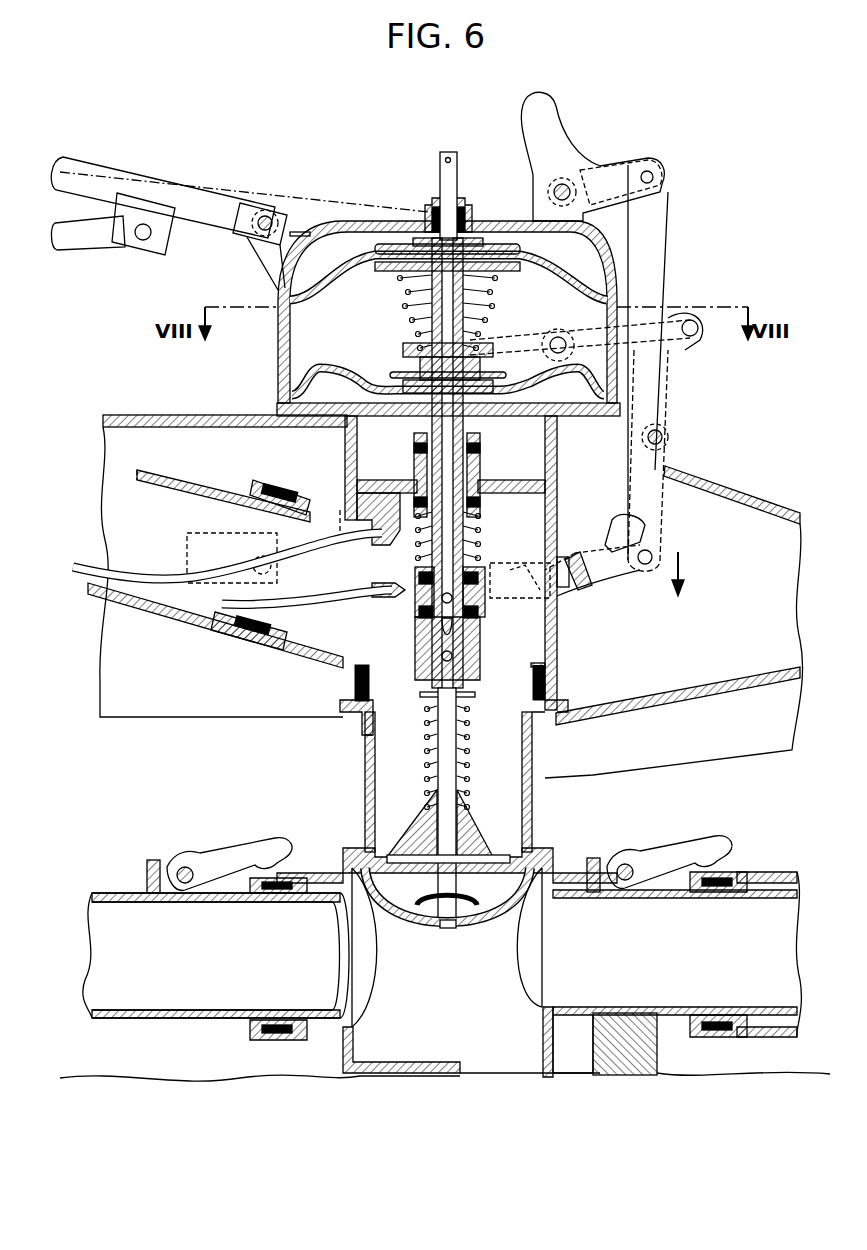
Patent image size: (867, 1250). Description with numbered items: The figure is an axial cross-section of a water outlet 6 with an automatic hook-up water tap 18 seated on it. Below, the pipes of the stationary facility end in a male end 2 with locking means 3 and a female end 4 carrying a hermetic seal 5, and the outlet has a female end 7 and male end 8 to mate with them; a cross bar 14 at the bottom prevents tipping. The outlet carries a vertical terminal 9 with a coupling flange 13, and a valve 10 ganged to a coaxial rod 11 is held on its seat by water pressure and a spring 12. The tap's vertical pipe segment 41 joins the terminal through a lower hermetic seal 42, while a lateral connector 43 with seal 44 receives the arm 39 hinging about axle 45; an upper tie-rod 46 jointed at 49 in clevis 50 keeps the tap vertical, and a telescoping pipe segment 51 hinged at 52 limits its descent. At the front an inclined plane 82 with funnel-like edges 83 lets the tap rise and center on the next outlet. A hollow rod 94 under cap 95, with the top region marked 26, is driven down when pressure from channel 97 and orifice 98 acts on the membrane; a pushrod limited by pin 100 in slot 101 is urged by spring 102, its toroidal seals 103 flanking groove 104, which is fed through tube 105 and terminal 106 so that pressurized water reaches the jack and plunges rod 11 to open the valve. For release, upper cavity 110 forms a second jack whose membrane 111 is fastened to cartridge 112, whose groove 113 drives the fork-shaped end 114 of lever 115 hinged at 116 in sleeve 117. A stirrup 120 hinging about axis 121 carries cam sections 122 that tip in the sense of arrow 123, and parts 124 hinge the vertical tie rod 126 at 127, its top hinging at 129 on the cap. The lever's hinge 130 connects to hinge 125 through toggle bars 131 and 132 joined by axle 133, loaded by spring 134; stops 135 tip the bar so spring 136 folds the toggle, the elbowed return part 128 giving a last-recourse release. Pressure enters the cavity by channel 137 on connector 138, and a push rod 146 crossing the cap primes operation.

The male end 2 is at (175, 1020).
The locking means 3 is at (226, 862).
The female end 4 is at (760, 1037).
The hermetic seal 5 is at (252, 1032).
The water outlet 6 is at (534, 848).
The female end 7 is at (311, 1037).
The male end 8 is at (680, 1020).
The vertical terminal 9 is at (368, 769).
The valve 10 is at (488, 905).
The rod 11 is at (458, 768).
The spring 12 is at (470, 725).
The coupling flange 13 is at (345, 717).
The cross bar 14 is at (625, 1055).
The water tap 18 is at (618, 266).
The top cover boss 26 is at (467, 213).
The arm 39 is at (183, 475).
The vertical pipe segment 41 is at (558, 641).
The lower hermetic seal 42 is at (545, 681).
The connector 43 is at (290, 659).
The hermetic seal 44 is at (230, 641).
The axle 45 is at (283, 570).
The upper tie-rod 46 is at (130, 177).
The joint 49 is at (262, 216).
The clevis 50 is at (305, 217).
The pipe segment 51 is at (92, 241).
The hinge 52 is at (140, 241).
The inclined plane 82 is at (668, 681).
The lower edges 83 is at (680, 741).
The hollow rod 94 is at (472, 428).
The cap 95 is at (405, 221).
The channel 97 is at (497, 285).
The transverse orifice 98 is at (462, 614).
The pin 100 is at (438, 659).
The slot 101 is at (416, 649).
The spring 102 is at (472, 536).
The toroidal seals 103 is at (419, 587).
The groove 104 is at (470, 594).
The tube 105 is at (318, 607).
The terminal 106 is at (375, 585).
The upper cavity 110 is at (382, 445).
The membrane 111 is at (318, 368).
The cartridge 112 is at (404, 350).
The groove 113 is at (418, 364).
The fork-shaped end 114 is at (512, 354).
The lever 115 is at (625, 325).
The hinge 116 is at (557, 340).
The sleeve 117 is at (280, 376).
The stirrup 120 is at (594, 589).
The axis 121 is at (568, 559).
The slanted section 122 is at (546, 610).
The arrow 123 is at (684, 571).
The parts 124 is at (622, 587).
The hinge 125 is at (652, 559).
The vertical tie rod 126 is at (652, 219).
The hinge 127 is at (652, 171).
The elbowed return part 128 is at (553, 126).
The hinge 129 is at (553, 190).
The hinge 130 is at (697, 324).
The small bar 131 is at (680, 397).
The small bar 132 is at (660, 475).
The axle 133 is at (662, 439).
The spring 134 is at (675, 379).
The stops 135 is at (612, 521).
The spring 136 is at (605, 179).
The channel 137 is at (185, 571).
The connector 138 is at (380, 507).
The push rod 146 is at (447, 170).